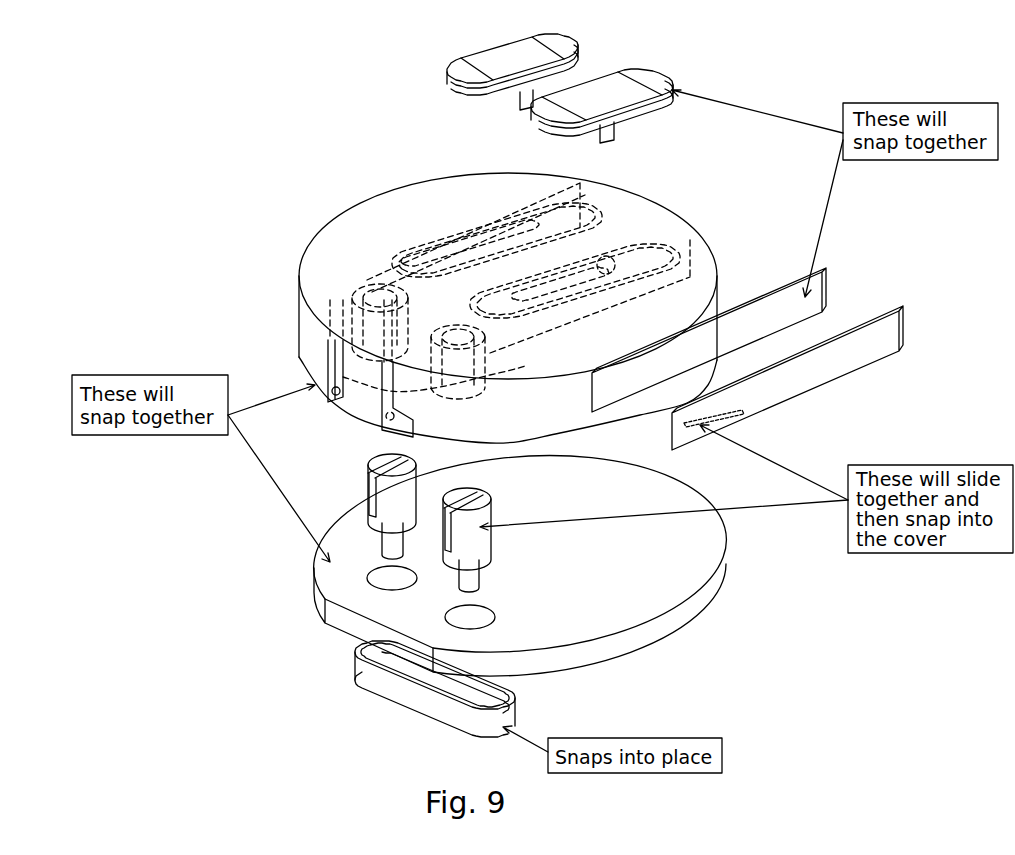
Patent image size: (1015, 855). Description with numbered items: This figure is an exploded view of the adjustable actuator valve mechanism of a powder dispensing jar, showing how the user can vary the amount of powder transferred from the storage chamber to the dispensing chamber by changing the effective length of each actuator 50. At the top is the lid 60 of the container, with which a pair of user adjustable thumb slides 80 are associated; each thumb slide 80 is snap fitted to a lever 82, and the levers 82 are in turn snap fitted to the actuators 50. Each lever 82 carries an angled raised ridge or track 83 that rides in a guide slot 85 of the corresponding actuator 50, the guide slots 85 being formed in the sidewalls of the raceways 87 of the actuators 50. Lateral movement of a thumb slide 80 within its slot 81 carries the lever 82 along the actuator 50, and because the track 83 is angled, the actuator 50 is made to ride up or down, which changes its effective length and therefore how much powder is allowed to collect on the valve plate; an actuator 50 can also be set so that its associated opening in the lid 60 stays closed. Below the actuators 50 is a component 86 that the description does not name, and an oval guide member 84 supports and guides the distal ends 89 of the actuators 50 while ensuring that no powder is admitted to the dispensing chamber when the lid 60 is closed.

The actuator 50 is at (374, 461).
The lid 60 is at (672, 207).
The thumb slide 80 is at (651, 67).
The slot 81 is at (603, 265).
The lever 82 is at (903, 322).
The angled raised ridge or track 83 is at (752, 426).
The guide member 84 is at (413, 710).
The guide slot 85 is at (444, 517).
The base plate 86 is at (728, 577).
The raceway 87 is at (457, 537).
The distal end 89 is at (467, 582).